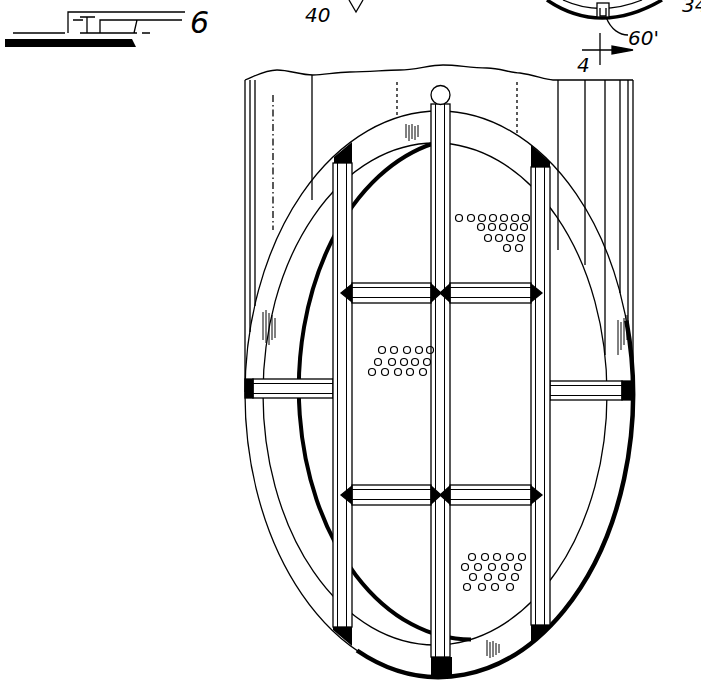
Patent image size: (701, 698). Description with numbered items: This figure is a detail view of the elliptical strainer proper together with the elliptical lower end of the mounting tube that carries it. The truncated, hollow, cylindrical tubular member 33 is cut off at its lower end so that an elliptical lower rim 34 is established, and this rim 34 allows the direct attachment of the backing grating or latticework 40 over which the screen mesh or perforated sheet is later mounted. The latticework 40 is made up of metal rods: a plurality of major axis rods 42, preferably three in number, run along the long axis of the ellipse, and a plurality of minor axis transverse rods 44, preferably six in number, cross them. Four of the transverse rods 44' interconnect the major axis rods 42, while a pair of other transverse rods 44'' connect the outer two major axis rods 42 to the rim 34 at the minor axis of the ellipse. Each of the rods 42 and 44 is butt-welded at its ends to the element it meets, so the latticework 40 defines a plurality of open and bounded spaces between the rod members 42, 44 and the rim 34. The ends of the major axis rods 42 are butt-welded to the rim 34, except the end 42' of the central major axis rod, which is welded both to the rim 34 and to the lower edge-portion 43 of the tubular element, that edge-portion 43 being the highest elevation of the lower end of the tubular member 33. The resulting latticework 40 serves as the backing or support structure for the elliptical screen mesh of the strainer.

The tubular member 33 is at (633, 195).
The elliptical lower rim 34 is at (605, 515).
The latticework 40 is at (556, 354).
The major axis rods 42 is at (457, 382).
The end of central major axis rod 42' is at (464, 372).
The lower edge-portion of tubular element 43 is at (366, 113).
The transverse rods 44 is at (391, 275).
The interconnecting transverse rods 44' is at (441, 393).
The outer transverse rods 44'' is at (438, 368).